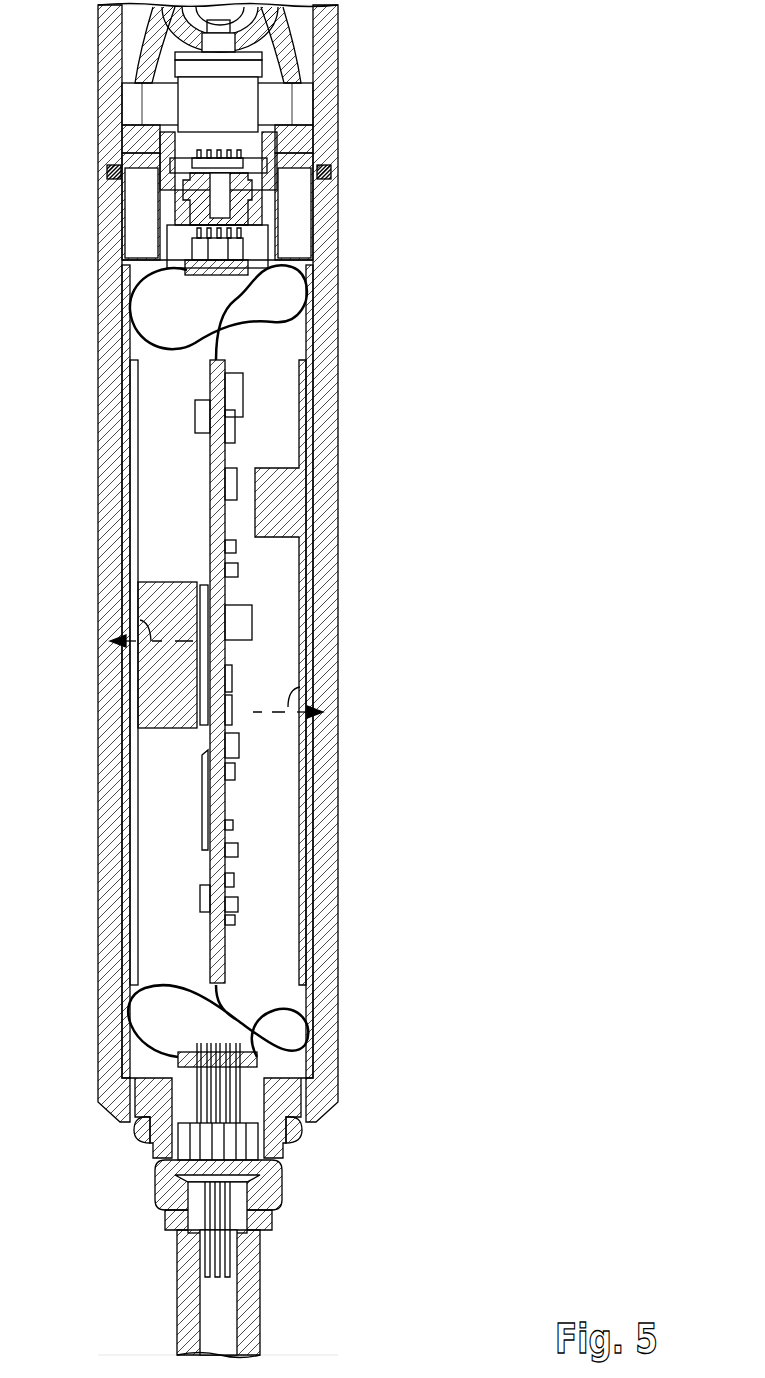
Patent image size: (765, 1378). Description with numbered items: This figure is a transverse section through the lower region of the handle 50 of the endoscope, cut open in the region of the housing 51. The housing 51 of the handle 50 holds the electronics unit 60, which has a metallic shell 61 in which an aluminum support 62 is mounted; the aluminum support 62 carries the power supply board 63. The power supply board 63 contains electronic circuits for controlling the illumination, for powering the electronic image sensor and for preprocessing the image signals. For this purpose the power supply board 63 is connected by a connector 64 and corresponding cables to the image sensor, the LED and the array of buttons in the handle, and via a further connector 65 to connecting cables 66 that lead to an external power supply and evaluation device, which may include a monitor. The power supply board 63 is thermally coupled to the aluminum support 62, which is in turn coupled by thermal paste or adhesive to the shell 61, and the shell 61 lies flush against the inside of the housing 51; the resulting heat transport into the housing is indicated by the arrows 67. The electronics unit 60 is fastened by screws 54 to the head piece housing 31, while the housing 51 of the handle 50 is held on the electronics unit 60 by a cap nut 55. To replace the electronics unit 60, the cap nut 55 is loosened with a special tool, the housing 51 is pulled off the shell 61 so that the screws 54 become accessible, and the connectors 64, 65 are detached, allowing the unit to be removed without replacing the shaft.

The head piece housing 31 is at (330, 47).
The handle 50 is at (434, 636).
The housing 51 is at (322, 527).
The screws 54 is at (133, 185).
The cap nut 55 is at (147, 1135).
The electronics unit 60 is at (318, 868).
The metallic shell 61 is at (313, 770).
The aluminum support 62 is at (140, 690).
The power supply board 63 is at (218, 925).
The connector 64 is at (250, 210).
The connector 65 is at (258, 1191).
The connecting cables 66 is at (222, 1313).
The arrows 67 is at (125, 623).